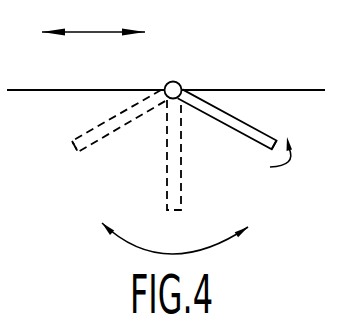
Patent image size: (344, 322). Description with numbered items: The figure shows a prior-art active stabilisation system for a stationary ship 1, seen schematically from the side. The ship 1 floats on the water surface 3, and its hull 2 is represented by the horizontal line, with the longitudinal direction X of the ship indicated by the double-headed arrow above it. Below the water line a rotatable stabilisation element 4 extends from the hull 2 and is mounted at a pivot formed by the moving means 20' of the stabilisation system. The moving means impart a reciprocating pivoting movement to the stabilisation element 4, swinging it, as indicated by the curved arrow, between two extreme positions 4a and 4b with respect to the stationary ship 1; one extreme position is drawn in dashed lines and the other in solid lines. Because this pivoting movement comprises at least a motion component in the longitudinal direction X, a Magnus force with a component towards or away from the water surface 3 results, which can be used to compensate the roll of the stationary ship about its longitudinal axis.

The longitudinal direction of the ship X is at (93, 20).
The stationary ship 1 is at (153, 70).
The hull 2 is at (278, 91).
The water surface 3 is at (287, 240).
The stabilisation element 4 is at (239, 131).
The first extreme position of the stabilisation element 4a is at (72, 158).
The second extreme position of the stabilisation element 4b is at (267, 157).
The moving means 20' is at (200, 63).